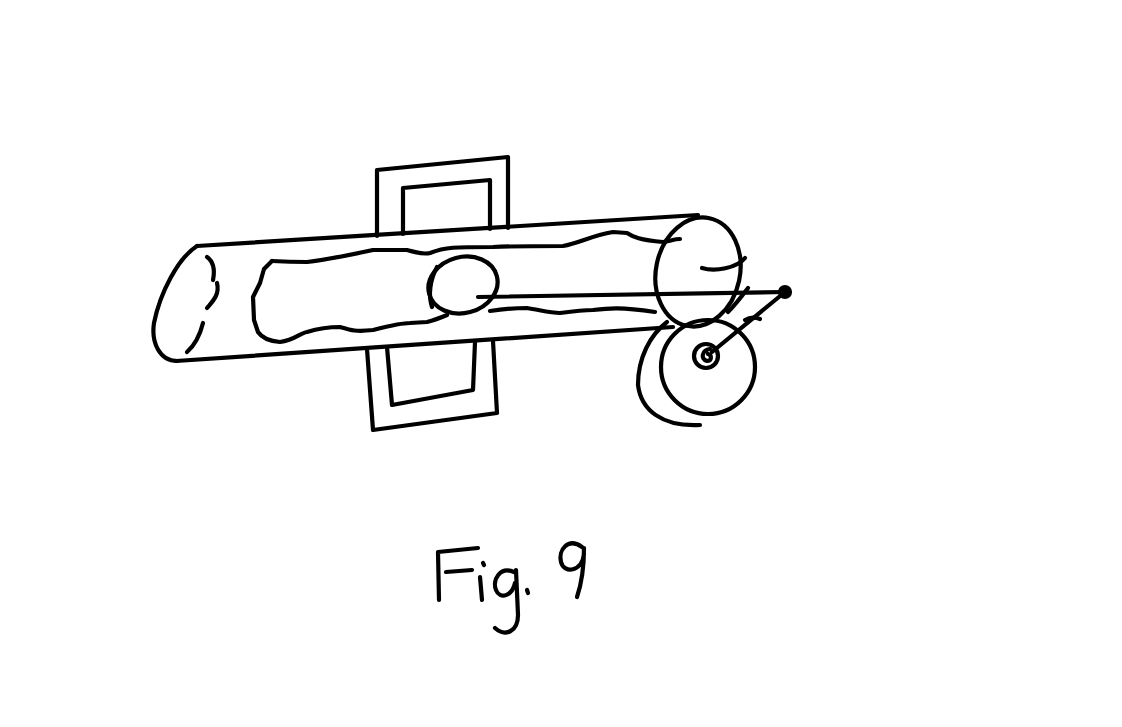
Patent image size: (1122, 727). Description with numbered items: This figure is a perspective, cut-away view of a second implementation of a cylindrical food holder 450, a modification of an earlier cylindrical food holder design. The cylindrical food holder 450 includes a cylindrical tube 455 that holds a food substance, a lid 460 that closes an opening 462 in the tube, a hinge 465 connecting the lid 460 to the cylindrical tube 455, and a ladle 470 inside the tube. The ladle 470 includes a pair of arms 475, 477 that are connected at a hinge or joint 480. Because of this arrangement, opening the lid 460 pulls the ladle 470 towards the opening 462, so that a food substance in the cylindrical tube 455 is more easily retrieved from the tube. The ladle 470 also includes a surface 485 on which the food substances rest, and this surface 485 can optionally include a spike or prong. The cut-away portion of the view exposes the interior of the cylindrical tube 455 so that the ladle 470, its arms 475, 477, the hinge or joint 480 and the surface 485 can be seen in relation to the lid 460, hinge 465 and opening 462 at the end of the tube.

The cylindrical food holder 450 is at (157, 89).
The cylindrical tube 455 is at (575, 218).
The lid 460 is at (728, 392).
The opening 462 is at (745, 258).
The hinge 465 is at (748, 288).
The ladle 470 is at (583, 298).
The arm 475 is at (748, 288).
The arm 477 is at (745, 320).
The hinge or joint 480 is at (787, 290).
The surface 485 is at (467, 282).